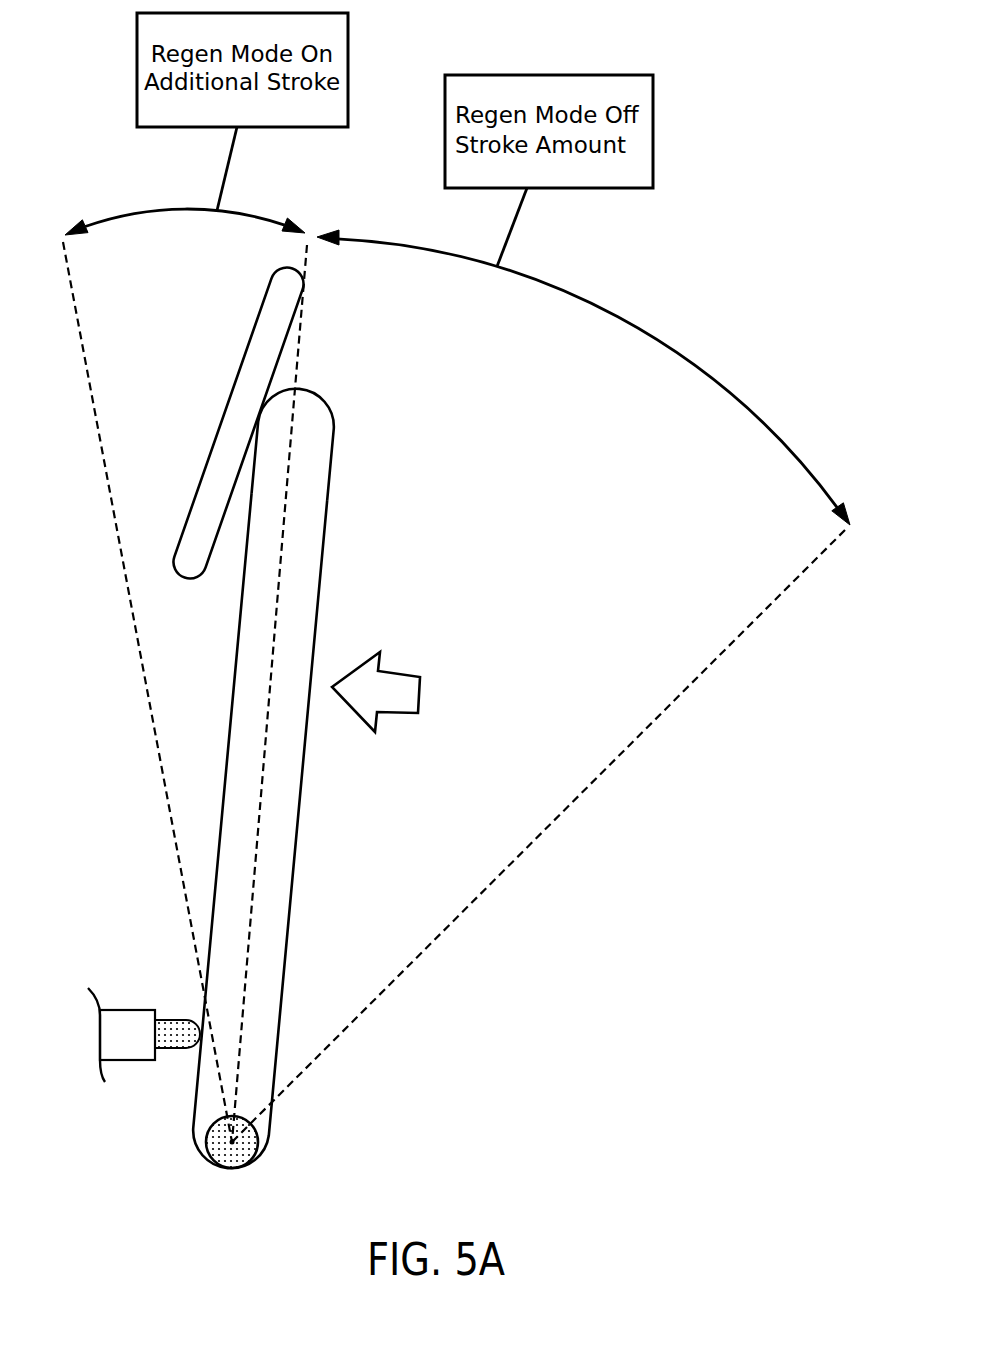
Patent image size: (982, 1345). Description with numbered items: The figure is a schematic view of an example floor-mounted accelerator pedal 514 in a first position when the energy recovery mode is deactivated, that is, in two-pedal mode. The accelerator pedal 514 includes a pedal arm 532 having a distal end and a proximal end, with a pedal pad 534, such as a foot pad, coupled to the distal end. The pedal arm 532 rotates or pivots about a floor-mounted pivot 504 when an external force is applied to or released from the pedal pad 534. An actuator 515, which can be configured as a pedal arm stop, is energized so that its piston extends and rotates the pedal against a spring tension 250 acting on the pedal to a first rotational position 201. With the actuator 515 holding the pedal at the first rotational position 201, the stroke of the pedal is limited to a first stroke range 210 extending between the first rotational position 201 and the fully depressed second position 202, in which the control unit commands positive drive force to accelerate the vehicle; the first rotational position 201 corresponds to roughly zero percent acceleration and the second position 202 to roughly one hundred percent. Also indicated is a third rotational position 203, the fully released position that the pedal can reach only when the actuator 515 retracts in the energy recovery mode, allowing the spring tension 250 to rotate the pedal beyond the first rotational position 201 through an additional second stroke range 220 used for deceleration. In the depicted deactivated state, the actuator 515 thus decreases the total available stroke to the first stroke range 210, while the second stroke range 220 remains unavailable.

The second stroke range 220 is at (168, 210).
The first stroke range 210 is at (630, 323).
The third rotational position 203 is at (105, 467).
The first rotational position 201 is at (293, 438).
The second position 202 is at (725, 650).
The pedal arm 532 is at (303, 770).
The floor-mounted accelerator pedal 514 is at (320, 397).
The pedal pad 534 is at (254, 330).
The pivot 504 is at (214, 1162).
The actuator 515 is at (123, 1060).
The spring tension 250 is at (412, 675).